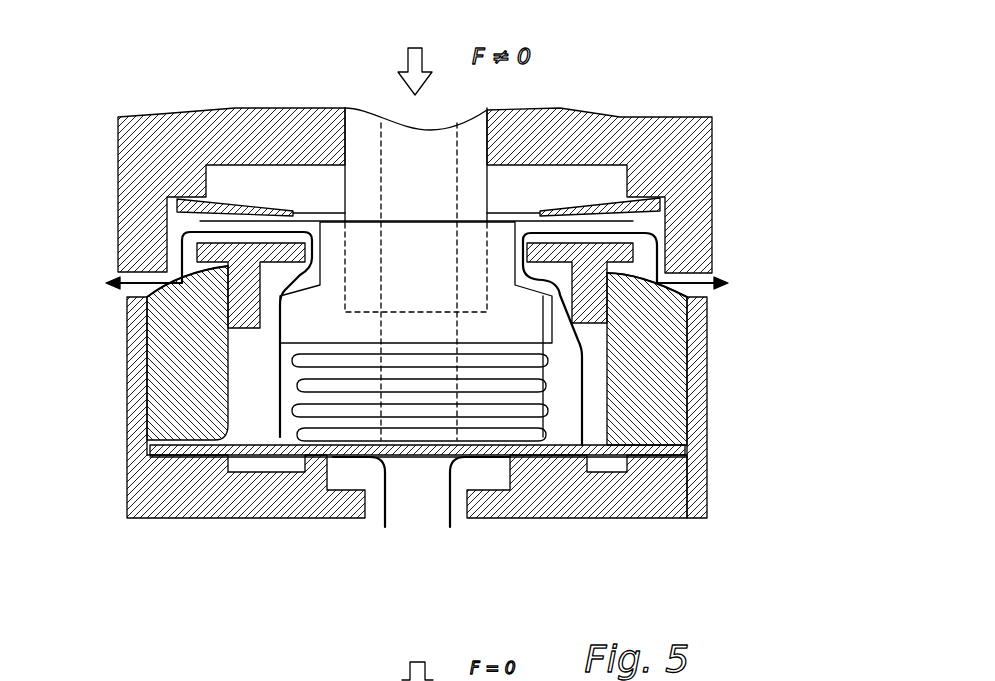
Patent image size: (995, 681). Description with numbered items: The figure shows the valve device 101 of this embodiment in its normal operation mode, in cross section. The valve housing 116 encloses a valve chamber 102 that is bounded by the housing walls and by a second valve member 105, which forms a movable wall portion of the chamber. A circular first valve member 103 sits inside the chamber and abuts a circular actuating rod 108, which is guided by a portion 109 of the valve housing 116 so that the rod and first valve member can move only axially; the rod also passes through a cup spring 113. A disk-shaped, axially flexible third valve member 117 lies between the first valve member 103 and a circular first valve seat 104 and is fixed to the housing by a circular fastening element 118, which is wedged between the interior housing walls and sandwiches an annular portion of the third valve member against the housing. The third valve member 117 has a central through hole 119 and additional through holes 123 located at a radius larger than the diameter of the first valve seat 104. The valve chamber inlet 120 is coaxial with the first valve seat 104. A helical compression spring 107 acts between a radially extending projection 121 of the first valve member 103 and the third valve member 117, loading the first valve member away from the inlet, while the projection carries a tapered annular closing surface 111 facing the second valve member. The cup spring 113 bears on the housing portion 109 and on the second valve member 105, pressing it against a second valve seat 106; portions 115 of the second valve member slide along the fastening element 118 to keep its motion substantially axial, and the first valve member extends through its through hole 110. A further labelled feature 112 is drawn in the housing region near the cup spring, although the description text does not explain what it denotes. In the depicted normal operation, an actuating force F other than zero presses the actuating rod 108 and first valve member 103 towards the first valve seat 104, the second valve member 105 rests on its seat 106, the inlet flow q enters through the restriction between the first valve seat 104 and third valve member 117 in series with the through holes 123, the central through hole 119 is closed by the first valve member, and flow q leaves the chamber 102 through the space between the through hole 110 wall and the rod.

The valve device 101 is at (733, 503).
The valve chamber 102 is at (640, 457).
The first valve member 103 is at (330, 372).
The first valve seat 104 is at (505, 455).
The second valve member 105 is at (590, 295).
The second valve seat 106 is at (180, 290).
The helical compression spring 107 is at (560, 460).
The actuating rod 108 is at (470, 152).
The portion of the valve housing 109 is at (700, 118).
The through hole 110 is at (262, 268).
The annular closing surface 111 is at (683, 320).
The housing channel 112 is at (660, 203).
The cup spring 113 is at (607, 207).
The portions extending into the chamber 115 is at (607, 338).
The valve housing 116 is at (225, 508).
The third valve member 117 is at (640, 465).
The fastening element 118 is at (185, 388).
The through hole 119 is at (418, 450).
The valve chamber inlet 120 is at (357, 477).
The radially extending projection 121 is at (597, 405).
The additional through holes 123 is at (607, 457).